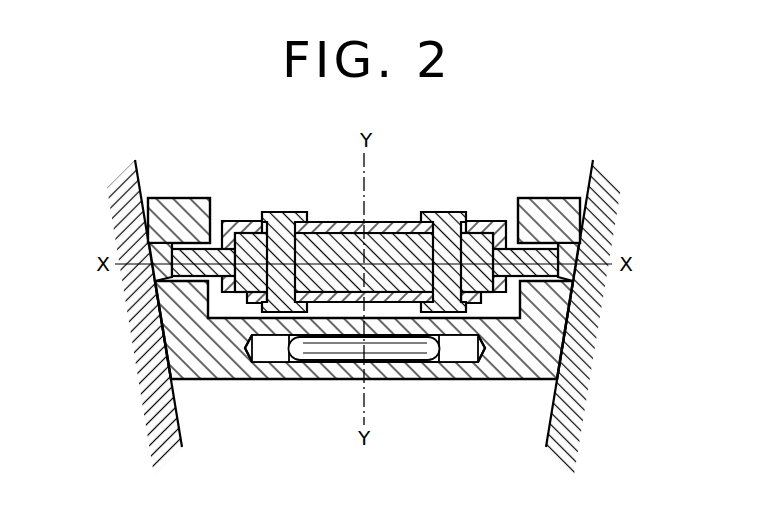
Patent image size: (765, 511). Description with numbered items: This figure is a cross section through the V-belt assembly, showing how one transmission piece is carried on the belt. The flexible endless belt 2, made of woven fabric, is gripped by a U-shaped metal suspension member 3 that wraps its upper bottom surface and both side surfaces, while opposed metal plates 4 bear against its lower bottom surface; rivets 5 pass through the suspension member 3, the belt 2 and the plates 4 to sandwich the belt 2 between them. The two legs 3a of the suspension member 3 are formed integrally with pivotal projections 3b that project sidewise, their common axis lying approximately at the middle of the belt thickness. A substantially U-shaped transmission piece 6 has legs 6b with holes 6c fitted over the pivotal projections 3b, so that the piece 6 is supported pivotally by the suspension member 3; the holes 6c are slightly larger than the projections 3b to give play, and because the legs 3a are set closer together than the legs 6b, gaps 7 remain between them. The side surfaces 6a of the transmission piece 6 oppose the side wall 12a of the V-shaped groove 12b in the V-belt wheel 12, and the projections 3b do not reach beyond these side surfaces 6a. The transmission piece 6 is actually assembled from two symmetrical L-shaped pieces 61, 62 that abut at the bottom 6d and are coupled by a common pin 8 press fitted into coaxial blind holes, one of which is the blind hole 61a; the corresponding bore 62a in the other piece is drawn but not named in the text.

The flexible endless belt 2 is at (330, 223).
The U-shaped metal suspension member 3 is at (384, 226).
The legs of suspension member 3a is at (243, 226).
The pivotal projections 3b is at (172, 270).
The metal plates 4 is at (389, 338).
The rivets 5 is at (281, 213).
The transmission piece 6 is at (532, 383).
The side surfaces of transmission piece 6a is at (160, 360).
The legs of transmission piece 6b is at (188, 212).
The holes 6c is at (153, 249).
The bottom of transmission piece 6d is at (290, 363).
The gaps 7 is at (218, 222).
The common pin 8 is at (337, 355).
The V-belt wheel 12 is at (165, 437).
The side wall of V-shaped groove 12a is at (178, 407).
The V-shaped groove 12b is at (386, 481).
The L-shaped piece 61 is at (217, 358).
The blind hole 61a is at (261, 350).
The L-shaped piece 62 is at (502, 368).
The right stopper block 62a is at (455, 353).